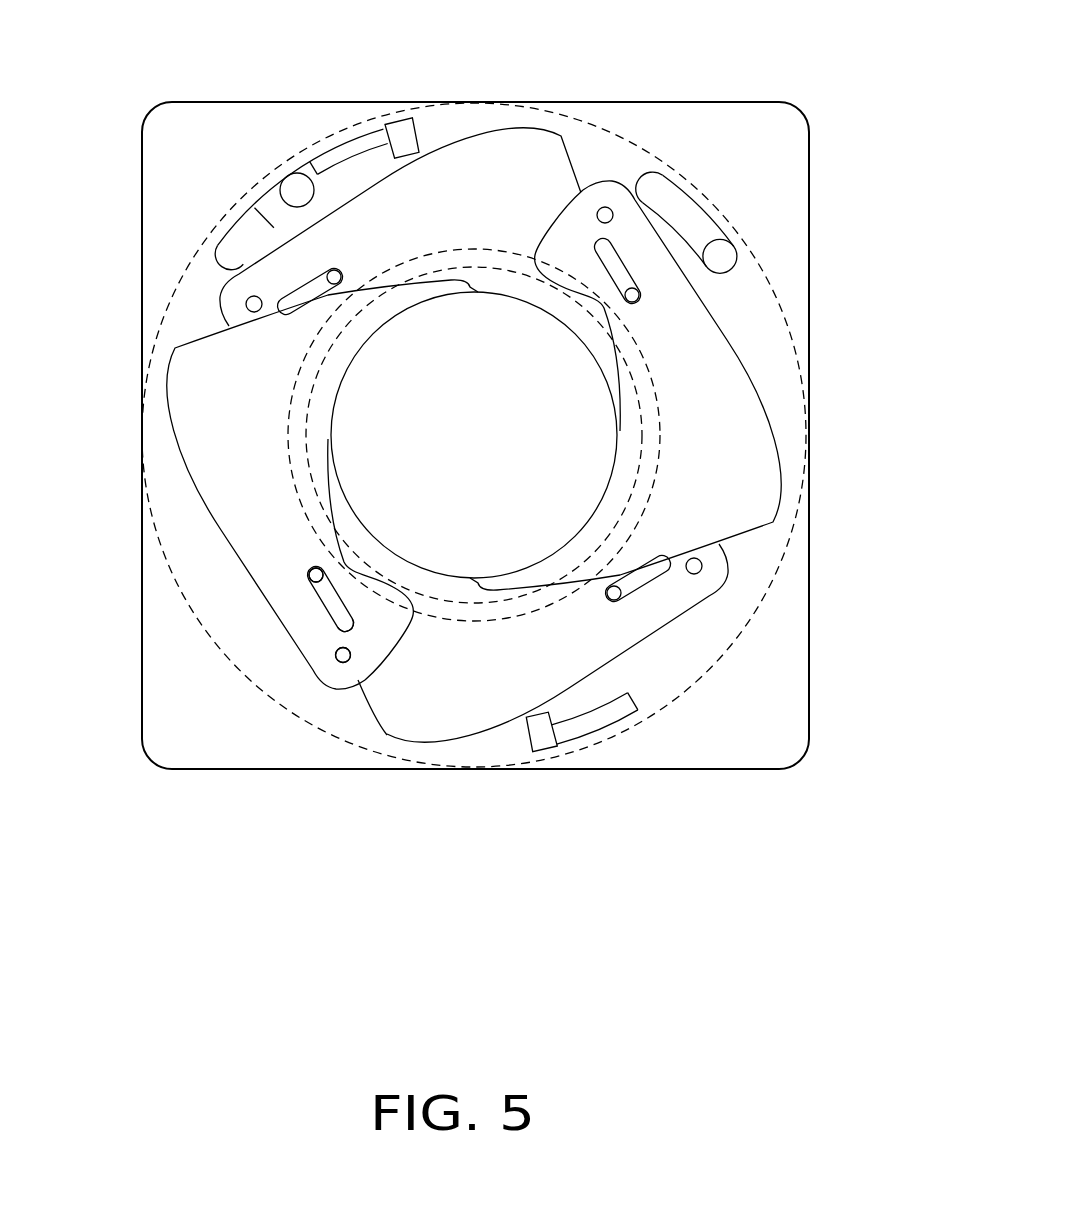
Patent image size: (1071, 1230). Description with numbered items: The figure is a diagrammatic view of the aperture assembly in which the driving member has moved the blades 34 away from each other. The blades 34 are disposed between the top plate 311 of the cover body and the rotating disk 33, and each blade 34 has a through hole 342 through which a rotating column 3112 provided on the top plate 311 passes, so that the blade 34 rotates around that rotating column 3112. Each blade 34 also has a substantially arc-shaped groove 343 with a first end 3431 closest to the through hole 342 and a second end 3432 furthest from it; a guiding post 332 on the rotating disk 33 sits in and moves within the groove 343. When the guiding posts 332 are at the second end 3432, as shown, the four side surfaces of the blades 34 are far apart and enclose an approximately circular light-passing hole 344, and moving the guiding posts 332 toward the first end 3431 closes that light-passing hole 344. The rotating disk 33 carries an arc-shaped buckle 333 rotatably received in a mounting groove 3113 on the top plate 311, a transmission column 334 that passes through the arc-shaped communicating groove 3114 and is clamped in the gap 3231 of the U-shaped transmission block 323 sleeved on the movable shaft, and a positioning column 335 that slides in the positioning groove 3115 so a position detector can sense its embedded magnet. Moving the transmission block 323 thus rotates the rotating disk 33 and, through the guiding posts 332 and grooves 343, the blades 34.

The top plate 311 is at (795, 702).
The rotating column 3112 is at (344, 663).
The mounting groove 3113 is at (612, 715).
The communicating groove 3114 is at (227, 251).
The positioning groove 3115 is at (681, 218).
The transmission block 323 is at (267, 198).
The gap 3231 is at (299, 206).
The rotating disk 33 is at (770, 587).
The guiding post 332 is at (309, 573).
The buckle 333 is at (542, 740).
The transmission column 334 is at (298, 188).
The positioning column 335 is at (722, 256).
The blade 34 is at (628, 445).
The through hole 342 is at (352, 662).
The groove 343 is at (323, 602).
The first end 3431 is at (330, 628).
The second end 3432 is at (310, 567).
The light-passing hole 344 is at (387, 422).